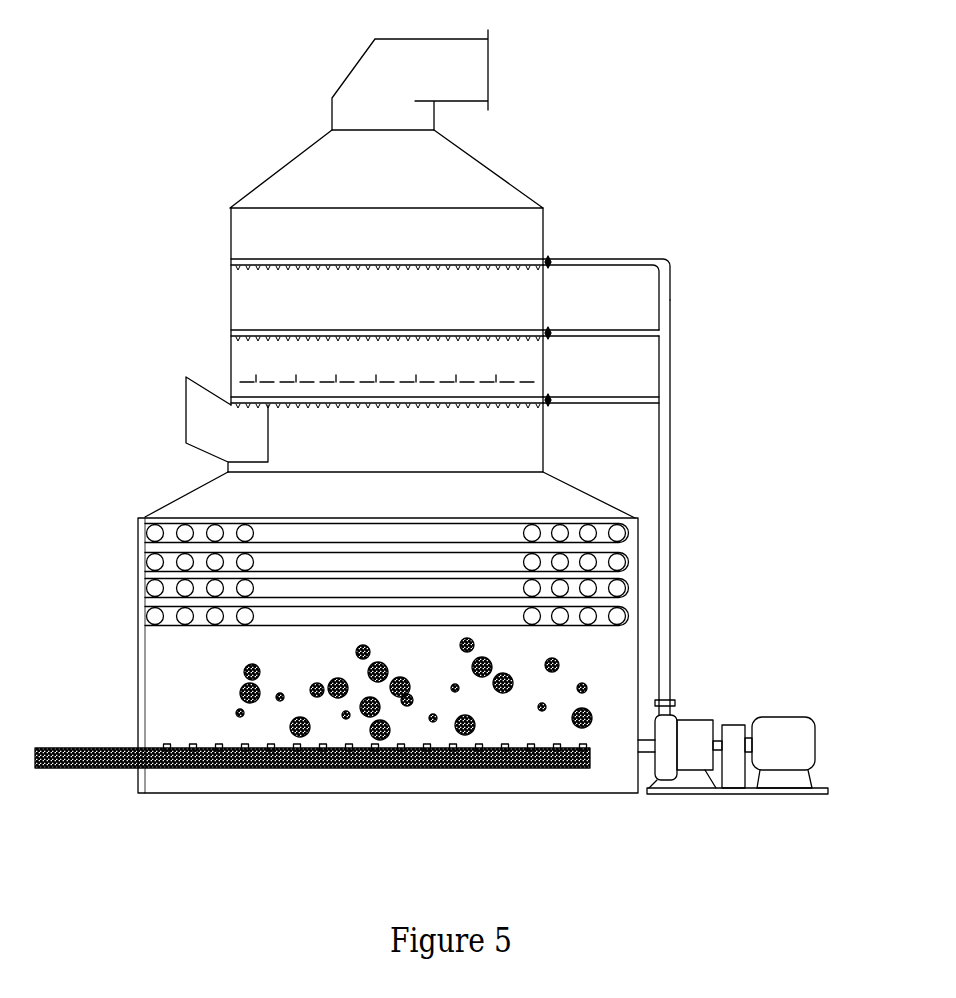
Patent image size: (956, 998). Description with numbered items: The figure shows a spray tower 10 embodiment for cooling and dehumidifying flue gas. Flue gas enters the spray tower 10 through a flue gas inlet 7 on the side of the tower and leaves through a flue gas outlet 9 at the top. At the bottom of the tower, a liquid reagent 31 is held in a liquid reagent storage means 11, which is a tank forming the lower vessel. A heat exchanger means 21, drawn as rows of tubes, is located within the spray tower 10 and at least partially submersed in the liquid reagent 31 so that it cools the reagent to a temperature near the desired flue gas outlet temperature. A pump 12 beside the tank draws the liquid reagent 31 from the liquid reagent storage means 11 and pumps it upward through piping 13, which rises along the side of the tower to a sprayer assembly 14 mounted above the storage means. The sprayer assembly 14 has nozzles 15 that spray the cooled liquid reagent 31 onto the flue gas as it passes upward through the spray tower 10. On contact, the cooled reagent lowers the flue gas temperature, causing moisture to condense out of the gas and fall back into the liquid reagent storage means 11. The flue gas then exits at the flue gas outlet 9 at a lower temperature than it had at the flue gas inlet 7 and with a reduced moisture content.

The spray tower 10 is at (122, 130).
The flue gas outlet 9 is at (488, 77).
The nozzles 15 is at (243, 280).
The sprayer assembly 14 is at (615, 257).
The piping 13 is at (663, 527).
The flue gas inlet 7 is at (147, 415).
The liquid reagent storage means 11 is at (110, 676).
The heat exchanger means 21 is at (135, 568).
The liquid reagent 31 is at (141, 794).
The pump 12 is at (802, 750).